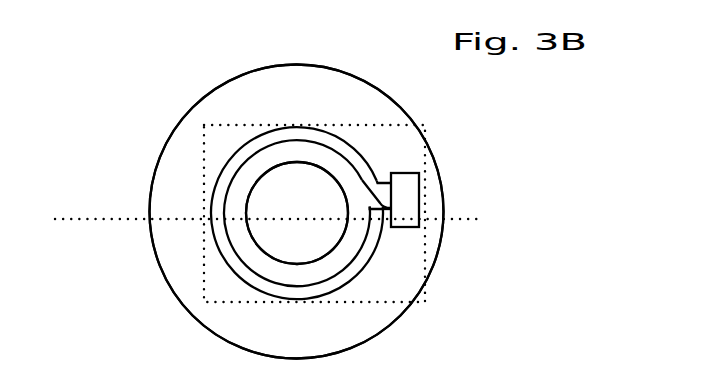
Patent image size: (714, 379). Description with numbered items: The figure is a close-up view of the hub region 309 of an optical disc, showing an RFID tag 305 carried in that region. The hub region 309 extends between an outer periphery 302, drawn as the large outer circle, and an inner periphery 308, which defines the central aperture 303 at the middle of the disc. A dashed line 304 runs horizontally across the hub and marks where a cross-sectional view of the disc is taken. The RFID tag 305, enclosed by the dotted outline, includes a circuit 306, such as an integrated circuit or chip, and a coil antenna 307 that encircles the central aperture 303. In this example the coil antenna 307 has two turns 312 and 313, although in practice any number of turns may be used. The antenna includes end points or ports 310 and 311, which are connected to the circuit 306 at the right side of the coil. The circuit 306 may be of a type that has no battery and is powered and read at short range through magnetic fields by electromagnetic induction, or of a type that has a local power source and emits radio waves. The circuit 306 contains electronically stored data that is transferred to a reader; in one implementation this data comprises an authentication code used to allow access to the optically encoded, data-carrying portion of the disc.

The outer periphery 302 is at (293, 63).
The central aperture 303 is at (297, 213).
The dashed line 304 is at (478, 218).
The RFID tag 305 is at (282, 302).
The circuit 306 is at (420, 172).
The coil antenna 307 is at (264, 188).
The inner periphery 308 is at (247, 208).
The hub region 309 is at (186, 322).
The end point or port 310 is at (378, 183).
The end point or port 311 is at (383, 206).
The turn 312 is at (316, 131).
The turn 313 is at (278, 126).